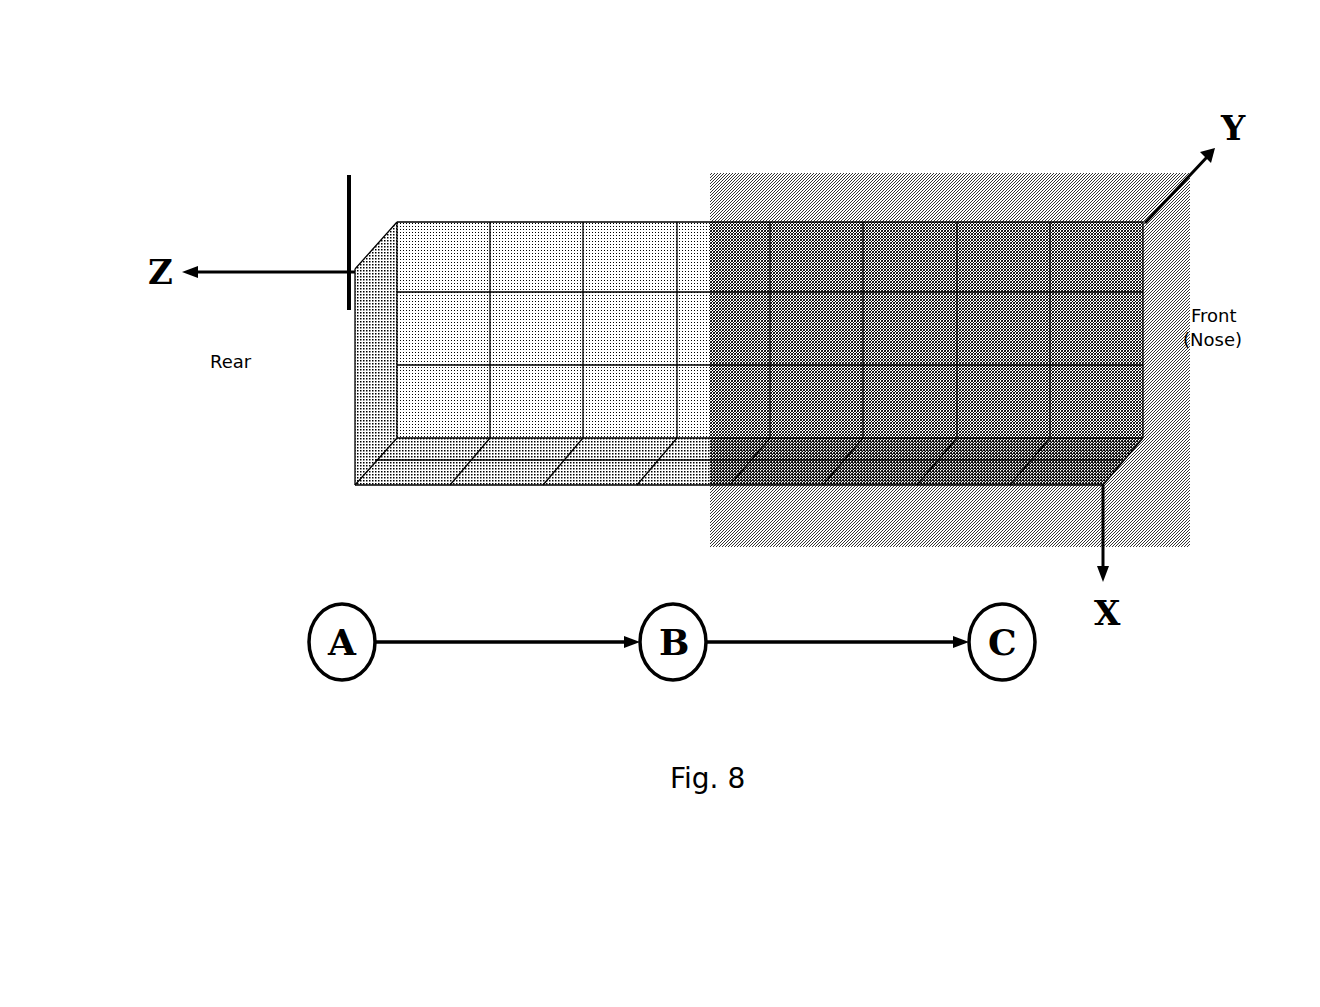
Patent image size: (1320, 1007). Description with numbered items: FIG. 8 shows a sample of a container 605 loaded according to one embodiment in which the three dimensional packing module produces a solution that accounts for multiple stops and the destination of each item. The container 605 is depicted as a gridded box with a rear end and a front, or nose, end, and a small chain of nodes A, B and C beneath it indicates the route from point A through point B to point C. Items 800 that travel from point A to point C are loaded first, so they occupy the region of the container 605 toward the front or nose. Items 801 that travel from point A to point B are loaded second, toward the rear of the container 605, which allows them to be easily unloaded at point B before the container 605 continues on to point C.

The container 605 is at (349, 175).
The items traveling from point A to point B 801 is at (765, 217).
The items traveling from point A to point C 800 is at (775, 218).